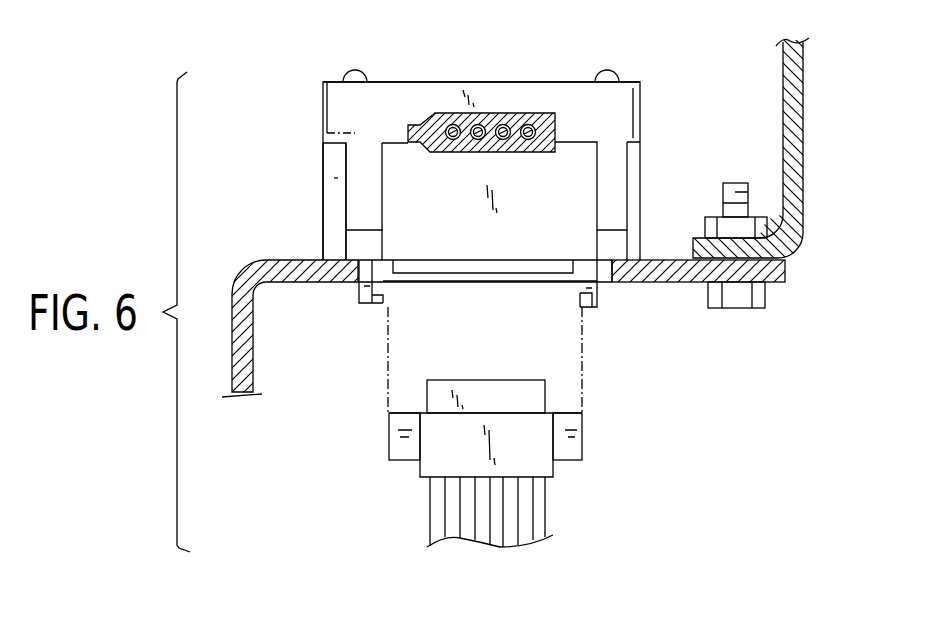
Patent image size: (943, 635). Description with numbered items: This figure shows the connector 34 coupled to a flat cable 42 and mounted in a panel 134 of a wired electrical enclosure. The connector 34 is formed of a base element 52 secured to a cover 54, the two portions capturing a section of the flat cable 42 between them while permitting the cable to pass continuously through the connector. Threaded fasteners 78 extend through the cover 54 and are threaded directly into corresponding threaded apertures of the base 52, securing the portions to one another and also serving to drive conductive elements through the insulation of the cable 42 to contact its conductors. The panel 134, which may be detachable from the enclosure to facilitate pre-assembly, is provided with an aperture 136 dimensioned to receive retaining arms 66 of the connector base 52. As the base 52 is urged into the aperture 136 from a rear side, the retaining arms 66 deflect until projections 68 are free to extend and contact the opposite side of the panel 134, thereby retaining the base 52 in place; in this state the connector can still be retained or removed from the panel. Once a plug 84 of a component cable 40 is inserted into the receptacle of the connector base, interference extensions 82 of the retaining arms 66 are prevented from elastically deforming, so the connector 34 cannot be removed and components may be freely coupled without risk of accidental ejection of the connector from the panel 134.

The connector 34 is at (672, 119).
The component cable 40 is at (437, 514).
The flat cable 42 is at (443, 113).
The base element 52 is at (338, 166).
The cover 54 is at (330, 113).
The retaining arms 66 is at (366, 279).
The projections 68 is at (349, 281).
The threaded fasteners 78 is at (352, 71).
The interference extensions 82 is at (386, 308).
The plug 84 is at (437, 463).
The panel 134 is at (683, 283).
The aperture 136 is at (360, 268).